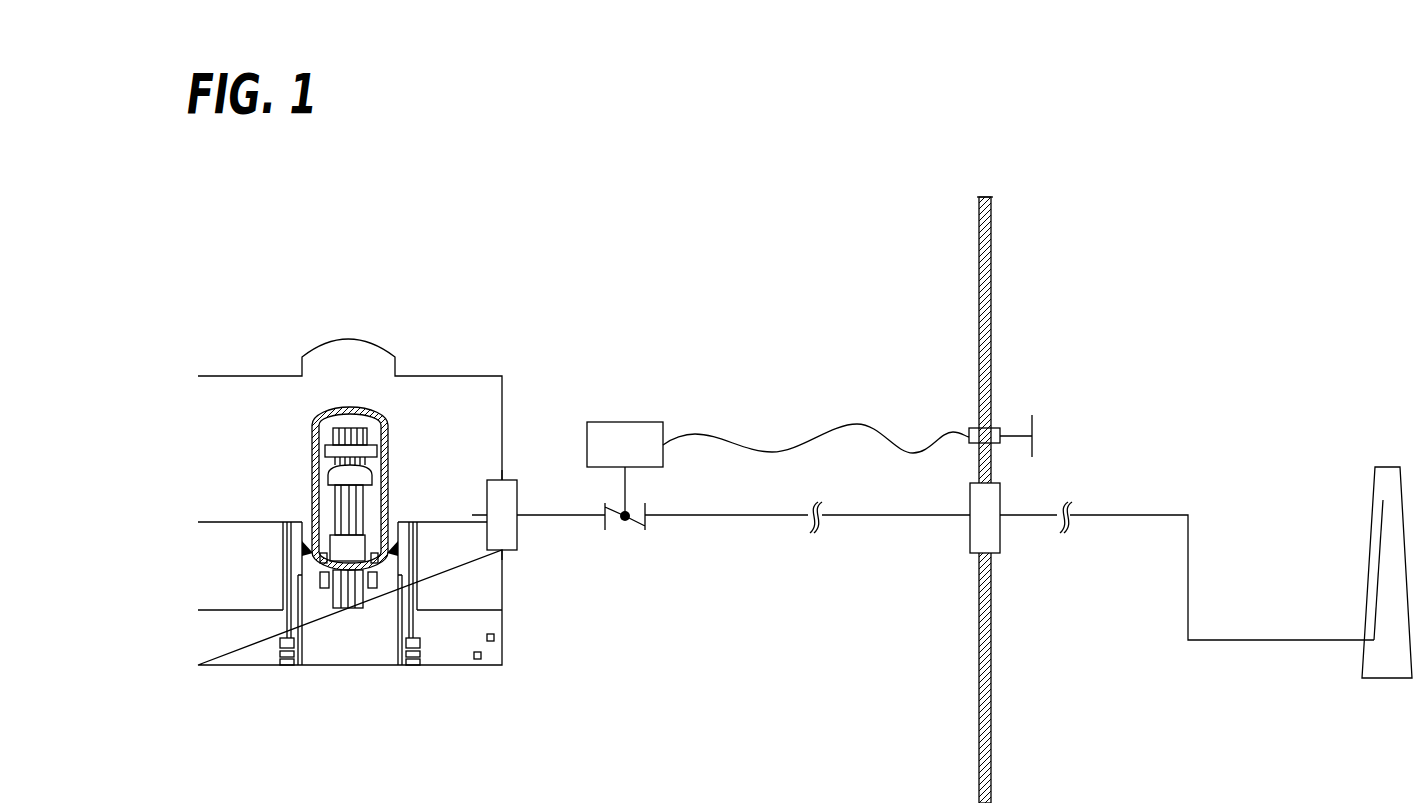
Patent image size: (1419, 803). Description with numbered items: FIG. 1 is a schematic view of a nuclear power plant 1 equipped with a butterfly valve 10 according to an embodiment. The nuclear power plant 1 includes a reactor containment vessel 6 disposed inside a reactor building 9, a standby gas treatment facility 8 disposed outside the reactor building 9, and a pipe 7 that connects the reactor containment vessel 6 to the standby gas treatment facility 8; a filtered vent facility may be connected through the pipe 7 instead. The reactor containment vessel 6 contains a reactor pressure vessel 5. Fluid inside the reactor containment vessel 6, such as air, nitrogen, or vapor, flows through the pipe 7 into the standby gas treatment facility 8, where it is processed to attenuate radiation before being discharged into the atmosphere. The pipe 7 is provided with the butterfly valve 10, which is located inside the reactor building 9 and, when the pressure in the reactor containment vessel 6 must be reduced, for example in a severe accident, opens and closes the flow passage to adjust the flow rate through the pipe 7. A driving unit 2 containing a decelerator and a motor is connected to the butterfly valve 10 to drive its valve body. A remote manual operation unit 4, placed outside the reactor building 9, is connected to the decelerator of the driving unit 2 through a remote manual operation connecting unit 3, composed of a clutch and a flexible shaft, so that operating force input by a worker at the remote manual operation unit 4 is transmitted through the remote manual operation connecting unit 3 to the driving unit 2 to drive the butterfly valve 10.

The nuclear power plant 1 is at (681, 186).
The driving unit 2 is at (627, 422).
The remote manual operation connecting unit 3 is at (742, 443).
The remote manual operation unit 4 is at (1012, 437).
The reactor pressure vessel 5 is at (312, 460).
The reactor containment vessel 6 is at (265, 376).
The pipe 7 is at (1142, 515).
The standby gas treatment facility 8 is at (1392, 678).
The reactor building 9 is at (991, 268).
The butterfly valve 10 is at (637, 530).